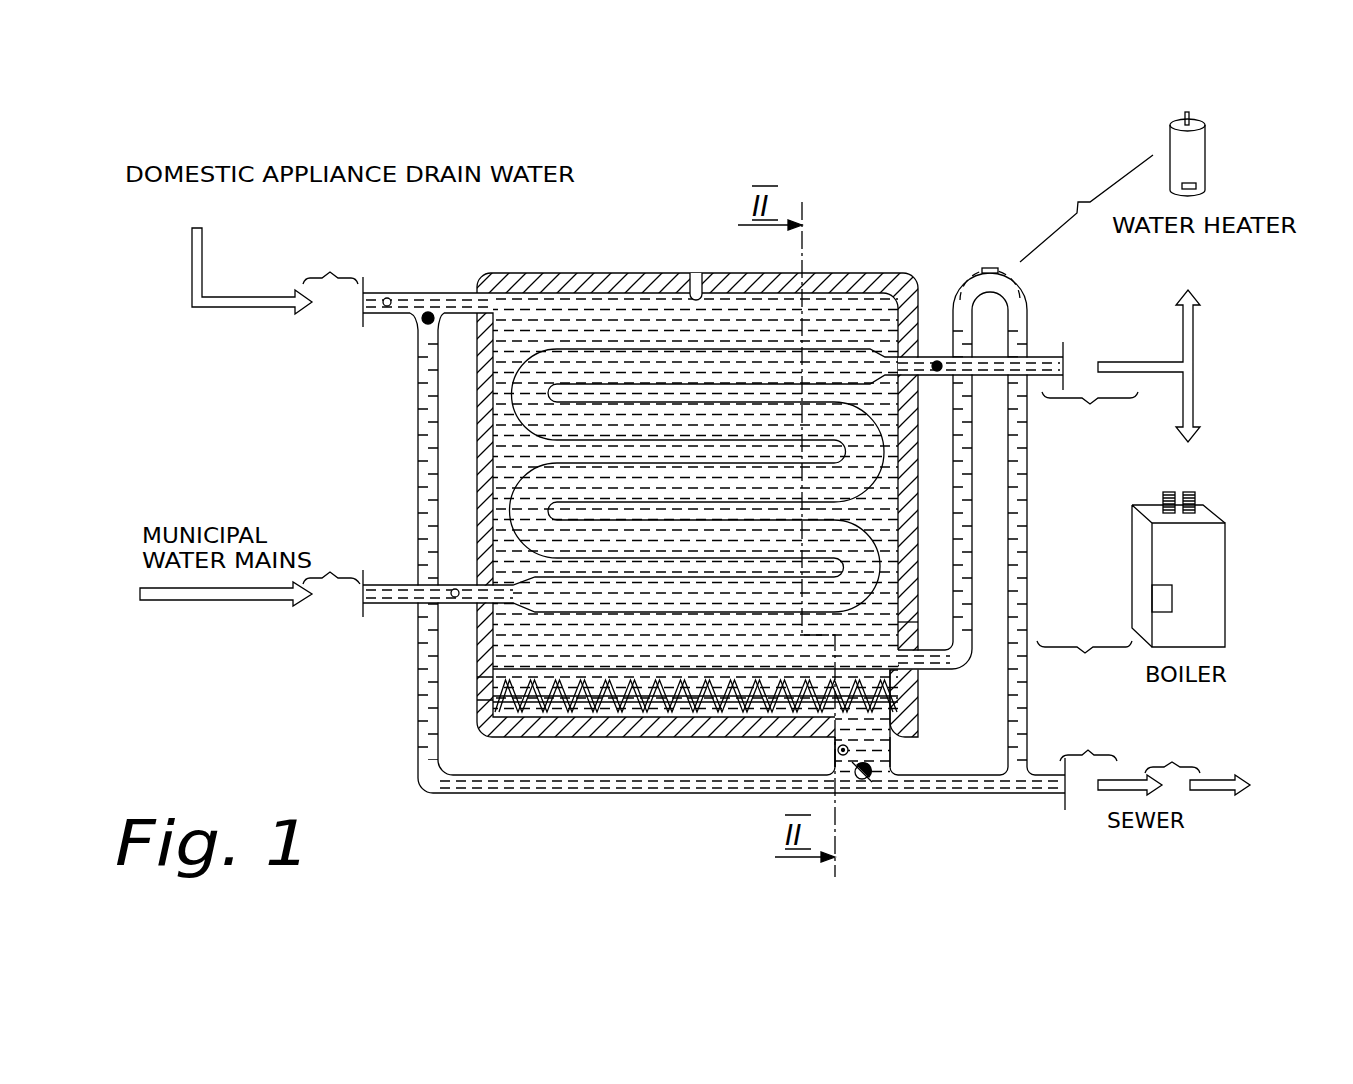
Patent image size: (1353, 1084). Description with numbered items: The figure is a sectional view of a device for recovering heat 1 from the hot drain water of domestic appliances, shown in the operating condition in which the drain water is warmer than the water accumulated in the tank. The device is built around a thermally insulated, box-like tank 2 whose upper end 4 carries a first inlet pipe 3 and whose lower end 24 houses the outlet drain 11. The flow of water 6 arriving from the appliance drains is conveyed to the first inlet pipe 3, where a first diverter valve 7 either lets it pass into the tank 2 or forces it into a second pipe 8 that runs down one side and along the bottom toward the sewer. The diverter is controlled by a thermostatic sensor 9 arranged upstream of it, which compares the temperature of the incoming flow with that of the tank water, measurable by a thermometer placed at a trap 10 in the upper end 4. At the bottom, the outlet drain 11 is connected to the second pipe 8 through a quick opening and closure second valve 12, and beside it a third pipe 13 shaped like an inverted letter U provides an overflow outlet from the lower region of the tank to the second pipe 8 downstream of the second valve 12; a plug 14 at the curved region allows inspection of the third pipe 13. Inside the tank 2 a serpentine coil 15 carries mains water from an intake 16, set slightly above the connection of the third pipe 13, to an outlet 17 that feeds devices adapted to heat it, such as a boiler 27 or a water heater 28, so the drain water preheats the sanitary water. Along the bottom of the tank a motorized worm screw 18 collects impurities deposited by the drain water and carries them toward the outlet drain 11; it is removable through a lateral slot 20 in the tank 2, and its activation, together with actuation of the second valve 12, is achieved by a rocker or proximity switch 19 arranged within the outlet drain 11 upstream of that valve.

The device for recovering heat 1 is at (1027, 163).
The tank 2 is at (906, 270).
The first inlet pipe 3 is at (446, 296).
The upper end 4 is at (836, 273).
The flow of water 6 is at (192, 265).
The first diverter valve 7 is at (423, 302).
The second pipe 8 is at (432, 745).
The thermostatic sensor 9 is at (385, 298).
The trap 10 is at (697, 273).
The outlet drain 11 is at (870, 743).
The second valve 12 is at (859, 783).
The third pipe 13 is at (1028, 482).
The plug 14 is at (990, 267).
The coil 15 is at (522, 433).
The intake 16 is at (388, 590).
The outlet 17 is at (1040, 357).
The worm screw 18 is at (607, 707).
The proximity switch 19 is at (838, 752).
The slot 20 is at (477, 685).
The lower end 24 is at (541, 740).
The boiler 27 is at (1198, 570).
The water heater 28 is at (1188, 155).